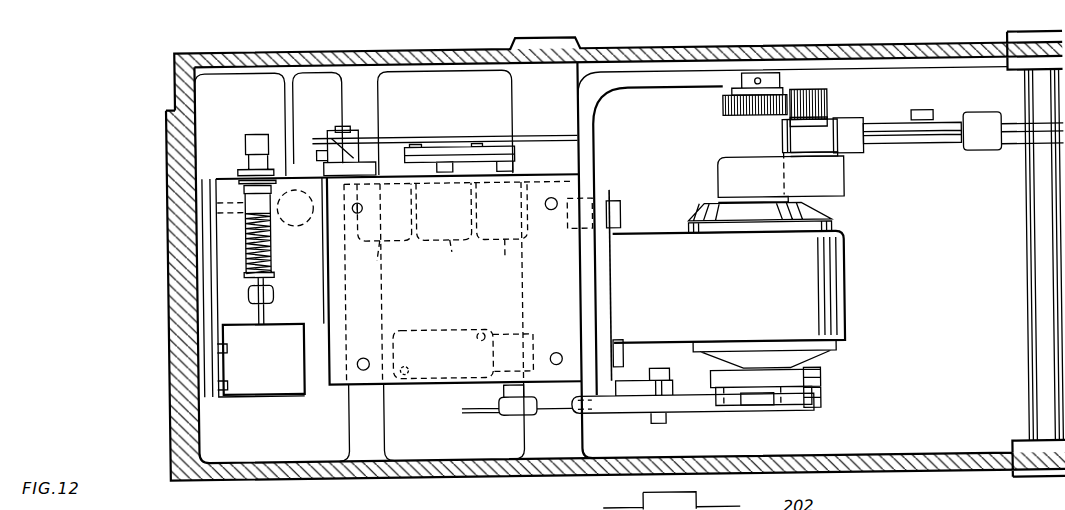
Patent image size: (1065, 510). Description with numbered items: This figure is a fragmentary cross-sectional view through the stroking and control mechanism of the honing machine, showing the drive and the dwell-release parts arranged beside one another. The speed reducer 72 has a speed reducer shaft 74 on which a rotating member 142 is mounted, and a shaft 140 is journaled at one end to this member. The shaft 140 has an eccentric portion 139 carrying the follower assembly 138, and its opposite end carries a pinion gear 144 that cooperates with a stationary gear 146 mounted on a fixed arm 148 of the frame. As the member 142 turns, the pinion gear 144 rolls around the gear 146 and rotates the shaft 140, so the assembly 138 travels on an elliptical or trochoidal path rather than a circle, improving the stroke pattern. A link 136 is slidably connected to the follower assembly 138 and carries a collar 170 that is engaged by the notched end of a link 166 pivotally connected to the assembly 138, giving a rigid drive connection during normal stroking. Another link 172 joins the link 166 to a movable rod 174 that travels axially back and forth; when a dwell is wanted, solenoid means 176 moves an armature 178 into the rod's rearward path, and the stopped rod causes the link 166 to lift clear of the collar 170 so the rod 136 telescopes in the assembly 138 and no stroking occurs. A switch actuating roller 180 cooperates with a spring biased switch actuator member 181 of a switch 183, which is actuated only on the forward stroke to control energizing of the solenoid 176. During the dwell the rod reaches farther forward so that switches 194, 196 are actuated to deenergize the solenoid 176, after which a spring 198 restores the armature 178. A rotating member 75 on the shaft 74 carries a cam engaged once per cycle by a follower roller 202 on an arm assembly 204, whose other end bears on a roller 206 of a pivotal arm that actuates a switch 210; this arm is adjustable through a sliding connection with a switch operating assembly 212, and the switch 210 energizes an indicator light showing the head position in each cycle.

The speed reducer 72 is at (838, 276).
The speed reducer shaft 74 is at (721, 206).
The rotating member 75 is at (818, 395).
The link 136 is at (1010, 145).
The follower assembly 138 is at (787, 134).
The eccentric portion 139 is at (845, 124).
The shaft 140 is at (812, 94).
The rotating member 142 is at (850, 176).
The pinion gear 144 is at (830, 104).
The stationary gear 146 is at (726, 108).
The fixed arm 148 is at (673, 90).
The link 166 is at (948, 146).
The collar 170 is at (978, 117).
The link 172 is at (926, 116).
The movable rod 174 is at (405, 135).
The solenoid means 176 is at (281, 361).
The armature 178 is at (257, 128).
The switch actuating roller 180 is at (387, 128).
The switch actuator member 181 is at (325, 148).
The switch 183 is at (401, 245).
The switch 194 is at (455, 244).
The switch 196 is at (527, 262).
The spring 198 is at (272, 246).
The follower roller 202 is at (766, 414).
The arm assembly 204 is at (697, 413).
The roller 206 is at (560, 400).
The switch 210 is at (505, 324).
The switch operating assembly 212 is at (512, 404).